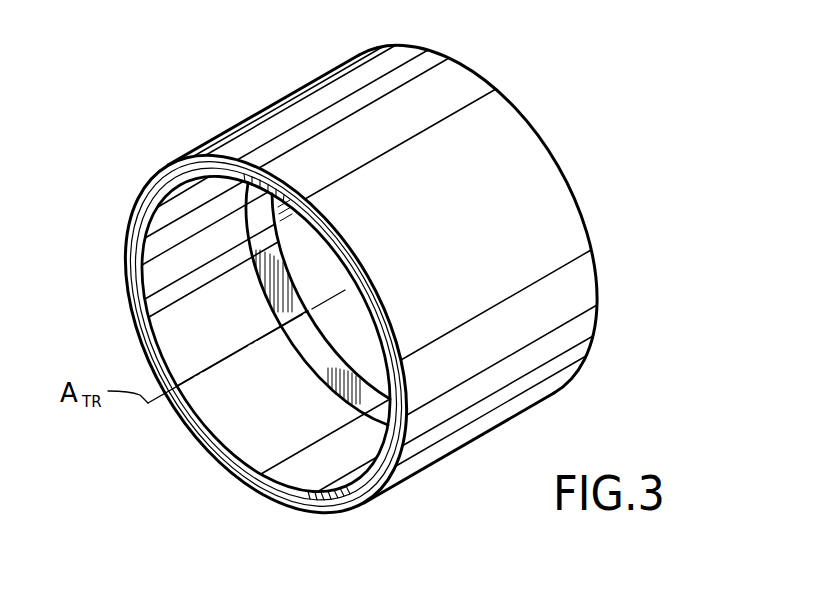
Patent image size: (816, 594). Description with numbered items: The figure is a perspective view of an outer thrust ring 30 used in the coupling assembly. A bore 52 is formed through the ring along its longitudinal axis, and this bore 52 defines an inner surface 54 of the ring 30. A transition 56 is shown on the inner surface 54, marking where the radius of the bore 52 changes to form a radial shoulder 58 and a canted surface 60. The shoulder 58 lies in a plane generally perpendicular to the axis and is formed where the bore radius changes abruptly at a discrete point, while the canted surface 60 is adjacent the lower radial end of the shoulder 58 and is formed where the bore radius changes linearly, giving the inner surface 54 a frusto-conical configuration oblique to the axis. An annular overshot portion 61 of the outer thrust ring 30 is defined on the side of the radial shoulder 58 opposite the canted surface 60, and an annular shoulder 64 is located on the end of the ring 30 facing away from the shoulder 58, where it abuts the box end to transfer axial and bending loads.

The outer thrust ring 30 is at (578, 146).
The bore 52 is at (176, 271).
The inner surface 54 is at (256, 438).
The transition 56 is at (252, 288).
The radial shoulder 58 is at (264, 238).
The canted surface 60 is at (328, 338).
The annular overshot portion 61 is at (148, 160).
The annular shoulder 64 is at (596, 224).